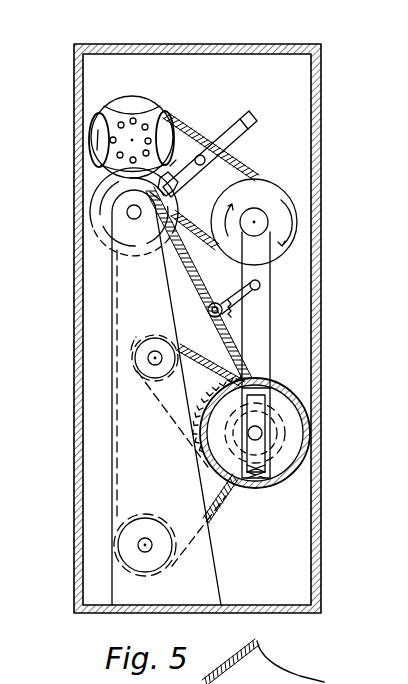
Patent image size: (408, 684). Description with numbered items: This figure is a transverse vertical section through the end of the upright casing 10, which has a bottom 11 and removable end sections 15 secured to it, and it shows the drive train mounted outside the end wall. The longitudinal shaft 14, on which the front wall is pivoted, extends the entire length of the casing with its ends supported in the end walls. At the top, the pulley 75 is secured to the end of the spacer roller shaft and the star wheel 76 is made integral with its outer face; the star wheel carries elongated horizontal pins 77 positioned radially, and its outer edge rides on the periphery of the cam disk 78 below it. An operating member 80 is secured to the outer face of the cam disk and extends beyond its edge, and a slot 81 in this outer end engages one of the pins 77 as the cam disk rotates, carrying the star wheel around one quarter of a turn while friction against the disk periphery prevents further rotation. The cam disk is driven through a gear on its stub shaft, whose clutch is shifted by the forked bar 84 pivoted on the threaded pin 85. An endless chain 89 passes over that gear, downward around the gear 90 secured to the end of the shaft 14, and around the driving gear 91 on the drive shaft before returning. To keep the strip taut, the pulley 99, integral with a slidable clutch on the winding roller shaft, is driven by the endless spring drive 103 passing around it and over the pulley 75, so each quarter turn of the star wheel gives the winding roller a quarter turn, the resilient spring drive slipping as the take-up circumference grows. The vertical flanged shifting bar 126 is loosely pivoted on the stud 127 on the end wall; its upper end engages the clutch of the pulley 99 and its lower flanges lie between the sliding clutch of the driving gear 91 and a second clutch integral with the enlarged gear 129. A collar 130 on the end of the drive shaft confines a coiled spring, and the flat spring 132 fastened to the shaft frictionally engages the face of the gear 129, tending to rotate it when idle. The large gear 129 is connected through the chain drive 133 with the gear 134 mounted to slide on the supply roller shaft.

The upright casing 10 is at (311, 149).
The bottom 11 is at (276, 606).
The longitudinal shaft 14 is at (150, 540).
The end sections 15 is at (112, 44).
The pulley 75 is at (139, 104).
The star wheel 76 is at (107, 117).
The horizontal pins 77 is at (118, 157).
The cam disk 78 is at (98, 205).
The operating member 80 is at (174, 194).
The slot 81 is at (206, 166).
The forked bar 84 is at (250, 114).
The threaded pin 85 is at (205, 136).
The endless chain 89 is at (199, 319).
The gear 90 is at (118, 546).
The driving gear 91 is at (300, 435).
The pulley 99 is at (286, 198).
The endless spring drive 103 is at (252, 159).
The vertical flanged shifting bar 126 is at (268, 298).
The stud 127 is at (262, 284).
The enlarged gear 129 is at (196, 452).
The collar 130 is at (312, 452).
The flat spring 132 is at (280, 488).
The chain drive 133 is at (305, 405).
The gear 134 is at (155, 373).